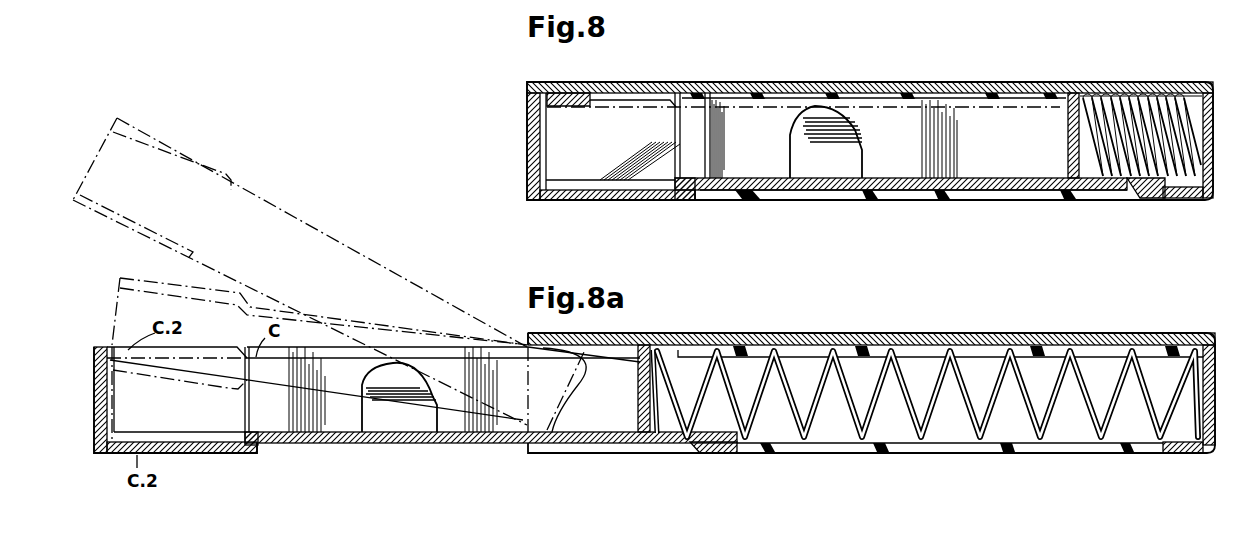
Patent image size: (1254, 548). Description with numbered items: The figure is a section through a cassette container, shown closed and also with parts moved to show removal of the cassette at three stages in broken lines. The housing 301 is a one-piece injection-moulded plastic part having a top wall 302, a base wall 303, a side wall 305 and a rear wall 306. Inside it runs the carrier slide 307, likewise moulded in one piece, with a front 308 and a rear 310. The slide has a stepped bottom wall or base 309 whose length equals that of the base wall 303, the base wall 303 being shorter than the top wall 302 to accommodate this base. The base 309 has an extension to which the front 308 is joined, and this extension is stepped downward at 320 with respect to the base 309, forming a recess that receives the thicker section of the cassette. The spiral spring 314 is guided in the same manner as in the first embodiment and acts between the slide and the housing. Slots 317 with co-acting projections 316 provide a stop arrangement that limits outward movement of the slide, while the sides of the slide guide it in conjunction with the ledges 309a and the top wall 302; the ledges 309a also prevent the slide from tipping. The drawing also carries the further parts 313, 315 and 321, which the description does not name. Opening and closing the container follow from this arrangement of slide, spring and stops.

In FIG. 8, the housing 301 is at (1016, 83).
In FIG. 8a, the housing 301 is at (1033, 333).
In FIG. 8, the top wall 302 is at (808, 83).
In FIG. 8a, the top wall 302 is at (884, 333).
In FIG. 8, the base wall 303 is at (1183, 200).
In FIG. 8a, the base wall 303 is at (1186, 455).
In FIG. 8, the side wall 305 is at (624, 117).
In FIG. 8a, the side wall 305 is at (1073, 434).
In FIG. 8, the rear wall 306 is at (1212, 113).
In FIG. 8a, the rear wall 306 is at (1218, 365).
In FIG. 8, the carrier slide 307 is at (648, 200).
In FIG. 8a, the carrier slide 307 is at (299, 449).
In FIG. 8, the front 308 is at (530, 140).
In FIG. 8a, the front 308 is at (108, 400).
In FIG. 8, the base 309 is at (775, 192).
In FIG. 8a, the base 309 is at (530, 447).
In FIG. 8a, the ledges 309a is at (620, 446).
In FIG. 8, the rear 310 is at (1068, 132).
In FIG. 8a, the rear 310 is at (638, 398).
In FIG. 8, the cam projection 313 is at (858, 153).
In FIG. 8a, the cam projection 313 is at (377, 412).
In FIG. 8, the spiral spring 314 is at (1072, 160).
In FIG. 8a, the spiral spring 314 is at (918, 422).
In FIG. 8, the top guide rail 315 is at (912, 98).
In FIG. 8a, the top guide rail 315 is at (817, 353).
In FIG. 8, the projections 316 is at (1140, 198).
In FIG. 8a, the projections 316 is at (728, 452).
In FIG. 8, the slots 317 is at (882, 192).
In FIG. 8a, the slots 317 is at (840, 445).
In FIG. 8, the step 320 is at (673, 178).
In FIG. 8a, the step 320 is at (245, 436).
In FIG. 8, the floor plate 321 is at (577, 182).
In FIG. 8a, the floor plate 321 is at (190, 432).